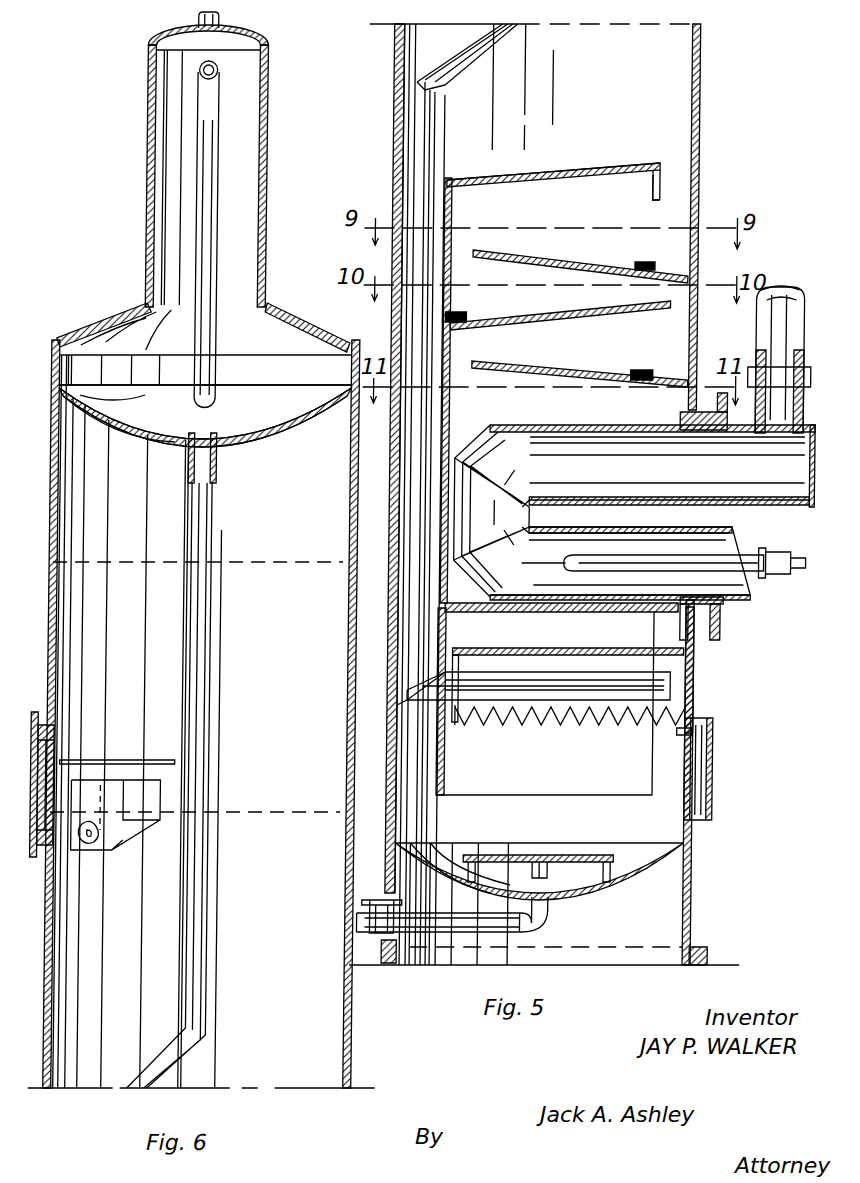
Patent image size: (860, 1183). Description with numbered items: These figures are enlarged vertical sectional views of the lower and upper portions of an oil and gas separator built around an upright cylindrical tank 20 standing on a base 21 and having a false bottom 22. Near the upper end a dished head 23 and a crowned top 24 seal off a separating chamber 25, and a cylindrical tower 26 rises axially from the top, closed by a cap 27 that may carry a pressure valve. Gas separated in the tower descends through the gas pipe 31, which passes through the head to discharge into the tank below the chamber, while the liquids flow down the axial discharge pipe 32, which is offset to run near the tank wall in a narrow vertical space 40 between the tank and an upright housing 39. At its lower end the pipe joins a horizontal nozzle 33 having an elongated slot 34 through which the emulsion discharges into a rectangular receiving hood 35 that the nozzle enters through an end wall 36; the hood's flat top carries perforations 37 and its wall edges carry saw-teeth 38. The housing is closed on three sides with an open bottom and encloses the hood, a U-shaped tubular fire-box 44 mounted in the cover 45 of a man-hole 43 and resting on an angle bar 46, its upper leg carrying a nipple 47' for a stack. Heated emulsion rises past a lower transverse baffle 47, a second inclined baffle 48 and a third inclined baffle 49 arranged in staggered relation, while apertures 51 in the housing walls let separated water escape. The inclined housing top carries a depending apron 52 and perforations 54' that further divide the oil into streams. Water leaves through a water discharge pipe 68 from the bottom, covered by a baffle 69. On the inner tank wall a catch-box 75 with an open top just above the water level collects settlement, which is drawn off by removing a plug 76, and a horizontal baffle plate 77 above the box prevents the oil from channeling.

In FIG. 6, the tank 20 is at (362, 690).
In FIG. 5, the tank 20 is at (702, 100).
In FIG. 5, the base 21 is at (707, 962).
In FIG. 5, the false bottom 22 is at (668, 868).
In FIG. 6, the dished head 23 is at (120, 412).
In FIG. 6, the crowned top 24 is at (110, 318).
In FIG. 6, the separating chamber 25 is at (304, 380).
In FIG. 6, the cylindrical column or tower 26 is at (270, 146).
In FIG. 6, the cap 27 is at (178, 32).
In FIG. 6, the gas pipe 31 is at (213, 196).
In FIG. 6, the axial discharge pipe 32 is at (208, 512).
In FIG. 5, the axial discharge pipe 32 is at (470, 55).
In FIG. 5, the horizontal nozzle 33 is at (690, 688).
In FIG. 5, the elongated slot 34 is at (702, 670).
In FIG. 5, the receiving hood 35 is at (472, 714).
In FIG. 5, the end wall 36 is at (436, 702).
In FIG. 5, the perforations 37 is at (540, 650).
In FIG. 5, the saw-teeth 38 is at (552, 724).
In FIG. 5, the upright housing 39 is at (455, 218).
In FIG. 5, the vertical space 40 is at (393, 592).
In FIG. 5, the man-hole 43 is at (718, 636).
In FIG. 5, the U-shaped tubular fire-box 44 is at (742, 600).
In FIG. 5, the cover 45 is at (732, 520).
In FIG. 5, the angle bar 46 is at (568, 606).
In FIG. 5, the lower transverse baffle 47 is at (579, 390).
In FIG. 5, the nipple 47' is at (653, 396).
In FIG. 5, the second inclined baffle 48 is at (560, 328).
In FIG. 5, the third inclined baffle 49 is at (560, 266).
In FIG. 5, the apertures 51 is at (636, 262).
In FIG. 5, the depending apron 52 is at (650, 178).
In FIG. 5, the perforations 54' is at (553, 159).
In FIG. 5, the water discharge pipe 68 is at (416, 922).
In FIG. 5, the baffle 69 is at (606, 856).
In FIG. 6, the catch-box 75 is at (128, 830).
In FIG. 6, the plug 76 is at (96, 848).
In FIG. 6, the horizontal baffle plate 77 is at (112, 762).